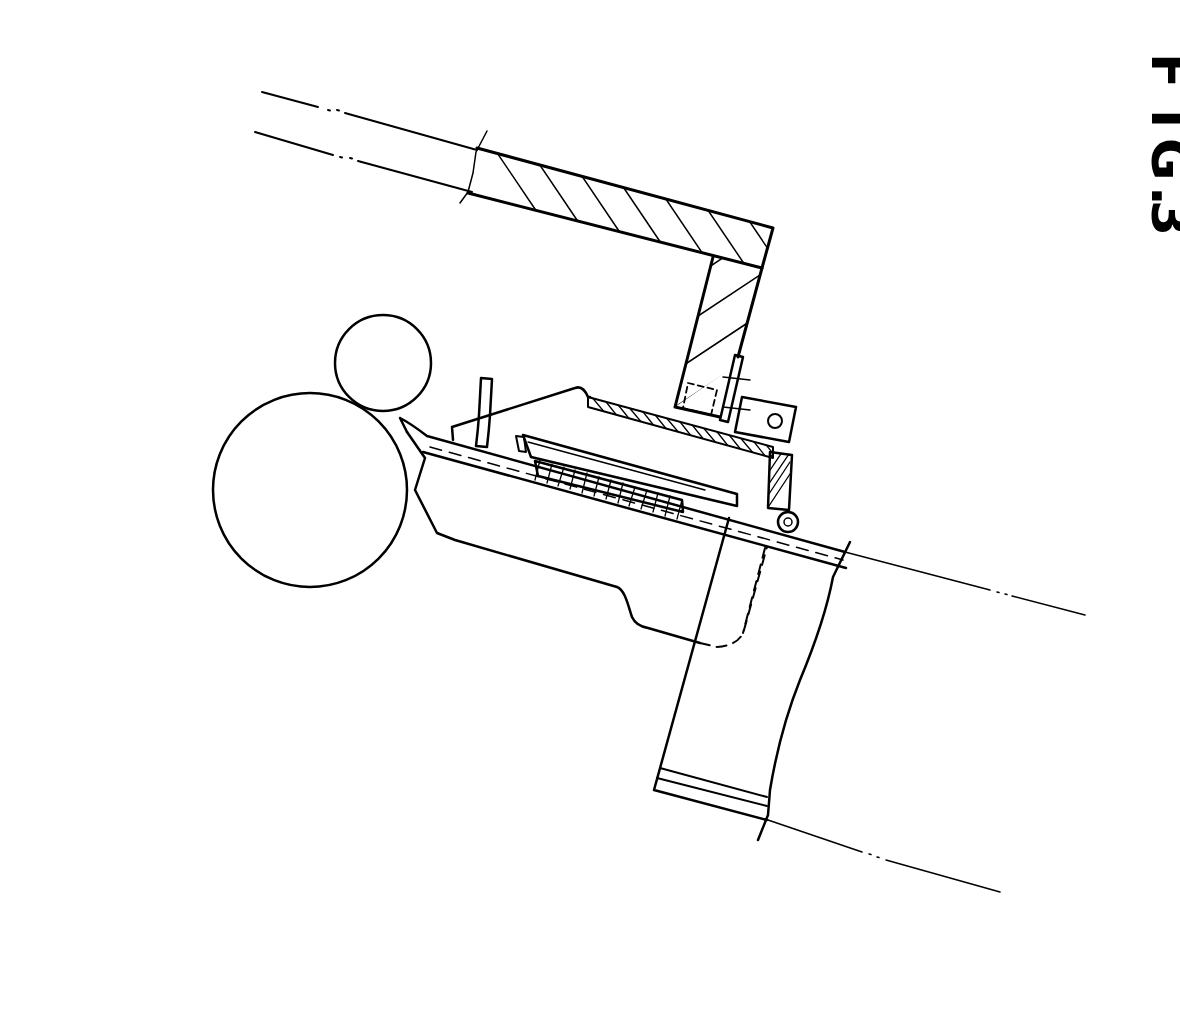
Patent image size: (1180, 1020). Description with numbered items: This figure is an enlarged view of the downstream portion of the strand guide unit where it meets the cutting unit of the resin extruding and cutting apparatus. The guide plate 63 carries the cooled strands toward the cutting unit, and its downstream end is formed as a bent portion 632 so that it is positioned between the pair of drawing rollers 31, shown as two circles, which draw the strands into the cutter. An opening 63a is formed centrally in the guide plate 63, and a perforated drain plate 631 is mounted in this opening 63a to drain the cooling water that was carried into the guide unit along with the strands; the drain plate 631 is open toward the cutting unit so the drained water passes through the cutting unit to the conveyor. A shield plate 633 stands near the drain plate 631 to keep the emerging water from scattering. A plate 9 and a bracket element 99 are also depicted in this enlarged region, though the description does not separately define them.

The plate 9 is at (641, 672).
The drawing rollers 31 is at (363, 353).
The guide plate 63 is at (498, 463).
The opening 63a is at (690, 493).
The bracket pin 99 is at (717, 497).
The perforated drain plate 631 is at (590, 483).
The bent portion 632 is at (413, 447).
The shield plate 633 is at (497, 380).